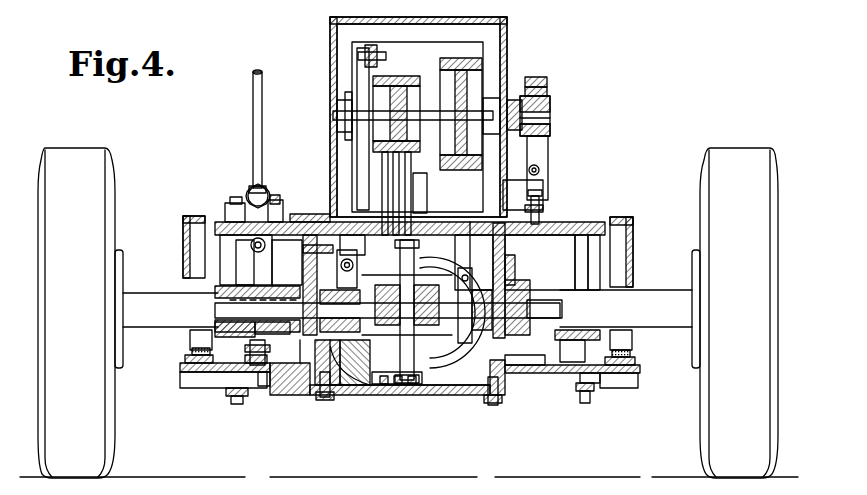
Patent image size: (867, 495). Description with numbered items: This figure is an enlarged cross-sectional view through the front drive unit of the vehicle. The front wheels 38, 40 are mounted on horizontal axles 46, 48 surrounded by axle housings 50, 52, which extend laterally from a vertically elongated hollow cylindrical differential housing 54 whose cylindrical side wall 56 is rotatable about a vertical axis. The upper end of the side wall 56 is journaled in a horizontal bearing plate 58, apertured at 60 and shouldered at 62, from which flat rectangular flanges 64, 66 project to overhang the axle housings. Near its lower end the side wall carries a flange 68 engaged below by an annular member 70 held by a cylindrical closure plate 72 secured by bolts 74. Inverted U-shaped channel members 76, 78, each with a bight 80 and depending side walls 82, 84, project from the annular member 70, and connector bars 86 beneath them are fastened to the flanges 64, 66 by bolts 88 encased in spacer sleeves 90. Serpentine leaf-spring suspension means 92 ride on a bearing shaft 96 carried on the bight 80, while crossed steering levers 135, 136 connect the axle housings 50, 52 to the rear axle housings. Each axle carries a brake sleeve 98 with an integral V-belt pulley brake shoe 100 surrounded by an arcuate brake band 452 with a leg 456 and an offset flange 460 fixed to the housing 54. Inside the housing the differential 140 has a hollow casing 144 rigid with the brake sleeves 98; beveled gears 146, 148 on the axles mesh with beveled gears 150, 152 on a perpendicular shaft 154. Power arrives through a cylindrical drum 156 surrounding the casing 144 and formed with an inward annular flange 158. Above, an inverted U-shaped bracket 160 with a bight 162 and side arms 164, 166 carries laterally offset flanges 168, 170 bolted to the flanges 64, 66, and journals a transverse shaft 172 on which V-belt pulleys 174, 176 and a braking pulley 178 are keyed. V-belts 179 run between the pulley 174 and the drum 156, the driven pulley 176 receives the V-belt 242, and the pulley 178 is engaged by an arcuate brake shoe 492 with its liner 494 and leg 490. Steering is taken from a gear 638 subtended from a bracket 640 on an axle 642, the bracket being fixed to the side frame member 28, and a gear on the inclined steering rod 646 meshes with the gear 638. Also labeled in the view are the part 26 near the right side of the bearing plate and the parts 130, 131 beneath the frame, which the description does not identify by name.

The bracket 26 is at (628, 217).
The side frame member 28 is at (183, 216).
The front wheel 38 is at (742, 148).
The front wheel 40 is at (105, 160).
The axle 46 is at (545, 300).
The axle 48 is at (240, 300).
The axle housing 50 is at (168, 293).
The axle housing 52 is at (525, 295).
The differential housing 54 is at (458, 240).
The cylindrical side wall 56 is at (493, 255).
The bearing plate 58 is at (295, 222).
The central aperture 60 is at (340, 260).
The shoulder 62 is at (470, 222).
The flange 64 is at (245, 198).
The flange 66 is at (555, 222).
The flange 68 is at (290, 366).
The annular member 70 is at (266, 388).
The cylindrical closure plate 72 is at (332, 400).
The bolts 74 is at (325, 402).
The channel member 76 is at (197, 380).
The channel member 78 is at (617, 393).
The bight 80 is at (185, 362).
The side wall 82 is at (183, 380).
The side wall 84 is at (636, 380).
The connector bar 86 is at (252, 388).
The bolts 88 is at (237, 404).
The spacer sleeve 90 is at (575, 250).
The serpentine spring-suspension means 92 is at (195, 340).
The bearing shaft 96 is at (192, 355).
The brake sleeve 98 is at (325, 332).
The V-belt pulley brake shoe 100 is at (305, 272).
The support 130 is at (228, 375).
The block 131 is at (548, 385).
The steering lever 135 is at (565, 335).
The steering lever 136 is at (220, 335).
The differential 140 is at (425, 265).
The hollow casing 144 is at (425, 348).
The beveled gear 146 is at (355, 350).
The beveled gear 148 is at (445, 282).
The beveled gear 150 is at (430, 240).
The beveled gear 152 is at (375, 388).
The shaft 154 is at (440, 390).
The cylindrical drum 156 is at (415, 400).
The annular flange 158 is at (360, 235).
The bracket 160 is at (508, 24).
The bight 162 is at (348, 17).
The side arm 164 is at (333, 70).
The side arm 166 is at (507, 72).
The laterally offset flange 168 is at (270, 195).
The laterally offset flange 170 is at (552, 210).
The transverse shaft 172 is at (425, 90).
The V-belt pulley 174 is at (375, 80).
The V-belt pulley 176 is at (446, 68).
The braking pulley 178 is at (552, 100).
The V-belts 179 is at (418, 170).
The V-belt 242 is at (487, 52).
The arcuate brake band 452 is at (325, 402).
The leg 456 is at (310, 210).
The offset flange 460 is at (505, 262).
The leg 490 is at (550, 162).
The arcuate brake shoe 492 is at (548, 78).
The V-belt brake liner 494 is at (552, 86).
The gear 638 is at (230, 208).
The bracket 640 is at (240, 243).
The axle 642 is at (236, 256).
The steering rod 646 is at (262, 108).